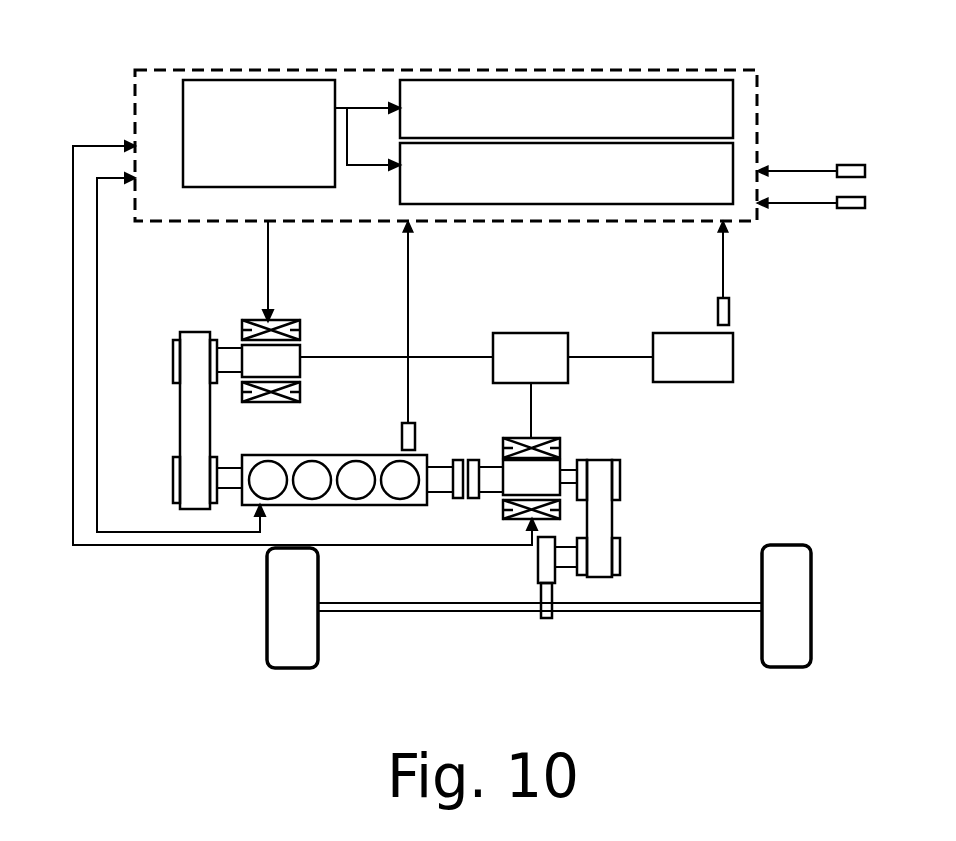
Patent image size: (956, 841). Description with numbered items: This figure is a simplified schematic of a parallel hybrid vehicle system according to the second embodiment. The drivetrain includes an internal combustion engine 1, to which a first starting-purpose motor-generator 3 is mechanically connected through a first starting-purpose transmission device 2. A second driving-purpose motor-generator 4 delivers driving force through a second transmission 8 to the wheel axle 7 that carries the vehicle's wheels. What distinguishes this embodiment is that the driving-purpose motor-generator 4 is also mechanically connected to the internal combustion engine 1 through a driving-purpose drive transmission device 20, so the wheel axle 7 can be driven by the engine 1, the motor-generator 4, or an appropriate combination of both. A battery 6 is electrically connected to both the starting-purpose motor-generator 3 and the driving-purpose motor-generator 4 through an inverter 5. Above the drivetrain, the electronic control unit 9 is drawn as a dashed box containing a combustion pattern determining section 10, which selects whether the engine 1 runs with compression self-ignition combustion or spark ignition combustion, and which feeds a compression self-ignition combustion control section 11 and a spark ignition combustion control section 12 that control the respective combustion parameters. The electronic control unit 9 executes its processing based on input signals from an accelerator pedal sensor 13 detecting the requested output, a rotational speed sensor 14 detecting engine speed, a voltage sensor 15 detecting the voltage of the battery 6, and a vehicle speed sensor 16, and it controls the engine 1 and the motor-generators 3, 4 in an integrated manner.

The internal combustion engine 1 is at (337, 455).
The first transmission device 2 is at (180, 418).
The first starting-purpose motor-generator 3 is at (300, 345).
The second driving-purpose motor-generator 4 is at (565, 462).
The inverter 5 is at (537, 333).
The battery 6 is at (700, 383).
The wheel axle 7 is at (483, 605).
The second transmission 8 is at (612, 527).
The electronic control unit 9 is at (533, 68).
The combustion pattern determining section 10 is at (205, 80).
The compression self-ignition combustion control section 11 is at (413, 80).
The spark ignition combustion control section 12 is at (573, 204).
The accelerator pedal sensor 13 is at (853, 163).
The rotational speed sensor 14 is at (415, 430).
The voltage sensor 15 is at (730, 313).
The vehicle speed sensor 16 is at (852, 210).
The driving-purpose drive transmission device 20 is at (465, 462).